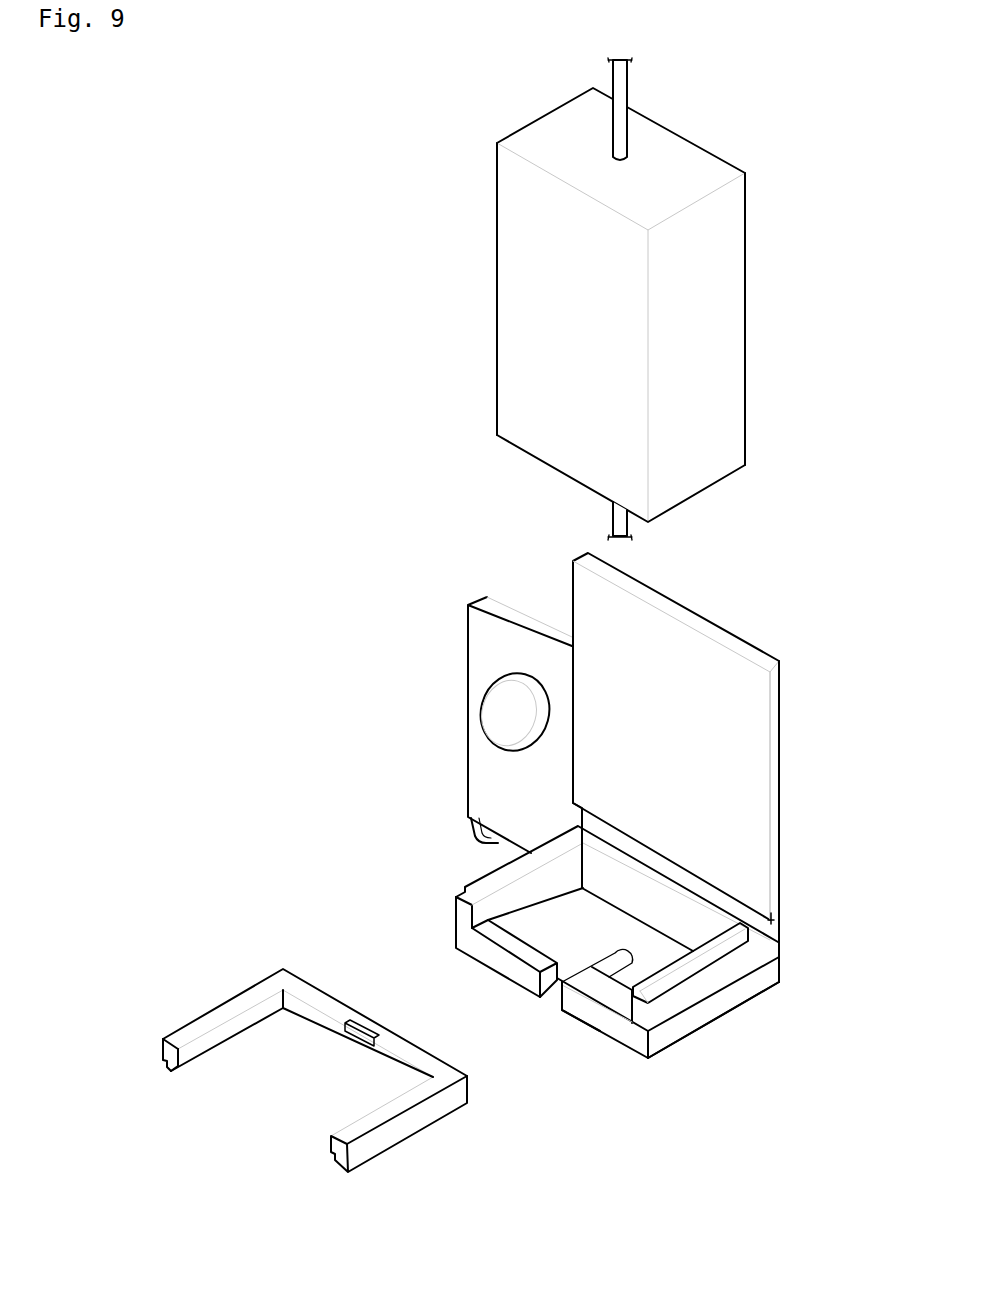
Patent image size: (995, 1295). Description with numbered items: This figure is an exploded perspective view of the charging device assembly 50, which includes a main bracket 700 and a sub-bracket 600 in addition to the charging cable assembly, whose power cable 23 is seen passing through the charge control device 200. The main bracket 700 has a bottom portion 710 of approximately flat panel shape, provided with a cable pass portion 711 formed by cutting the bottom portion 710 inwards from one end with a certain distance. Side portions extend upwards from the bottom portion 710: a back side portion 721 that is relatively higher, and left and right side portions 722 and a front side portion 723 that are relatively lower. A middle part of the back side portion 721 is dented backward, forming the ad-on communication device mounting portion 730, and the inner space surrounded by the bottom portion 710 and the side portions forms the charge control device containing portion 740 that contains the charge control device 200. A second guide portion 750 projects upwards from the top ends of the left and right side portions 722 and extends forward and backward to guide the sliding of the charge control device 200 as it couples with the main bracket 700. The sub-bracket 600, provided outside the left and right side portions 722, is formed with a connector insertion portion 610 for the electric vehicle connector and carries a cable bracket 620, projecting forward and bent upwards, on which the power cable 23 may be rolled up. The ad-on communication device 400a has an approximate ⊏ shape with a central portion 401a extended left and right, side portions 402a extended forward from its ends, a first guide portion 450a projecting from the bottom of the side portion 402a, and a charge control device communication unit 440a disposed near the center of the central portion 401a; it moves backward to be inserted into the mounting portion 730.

The charging device assembly 50 is at (313, 193).
The power cable 23 is at (620, 137).
The charge control device 200 is at (520, 310).
The sub-bracket 600 is at (460, 606).
The connector insertion portion 610 is at (502, 712).
The cable bracket 620 is at (470, 822).
The main bracket 700 is at (788, 648).
The back side portion 721 is at (776, 750).
The ad-on communication device mounting portion 730 is at (774, 920).
The second guide portion 750 is at (475, 890).
The charge control device containing portion 740 is at (557, 941).
The bottom portion 710 is at (682, 955).
The cable pass portion 711 is at (607, 968).
The left and right side portions 722 is at (695, 1010).
The front side portion 723 is at (583, 1012).
The ad-on communication device 400a is at (220, 965).
The central portion 401a is at (330, 1003).
The side portion 402a is at (432, 1112).
The first guide portion 450a is at (165, 1062).
The charge control device communication unit 440a is at (350, 1035).